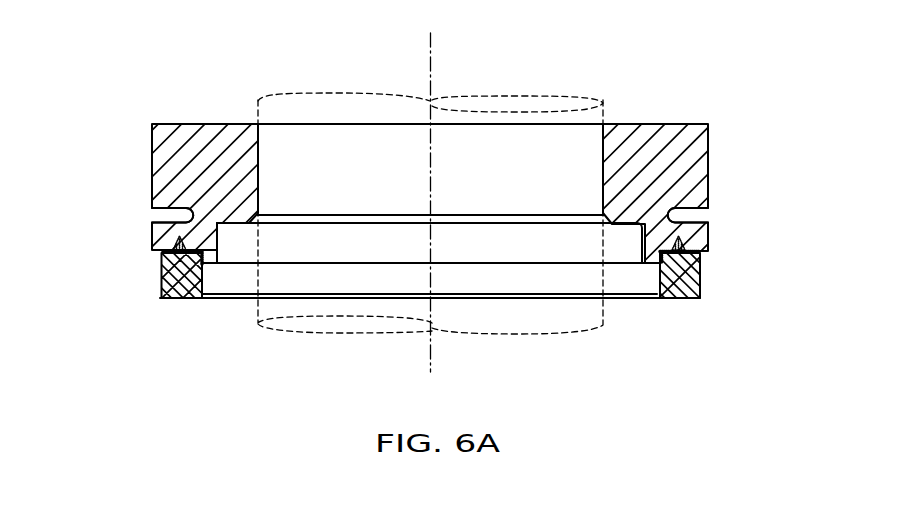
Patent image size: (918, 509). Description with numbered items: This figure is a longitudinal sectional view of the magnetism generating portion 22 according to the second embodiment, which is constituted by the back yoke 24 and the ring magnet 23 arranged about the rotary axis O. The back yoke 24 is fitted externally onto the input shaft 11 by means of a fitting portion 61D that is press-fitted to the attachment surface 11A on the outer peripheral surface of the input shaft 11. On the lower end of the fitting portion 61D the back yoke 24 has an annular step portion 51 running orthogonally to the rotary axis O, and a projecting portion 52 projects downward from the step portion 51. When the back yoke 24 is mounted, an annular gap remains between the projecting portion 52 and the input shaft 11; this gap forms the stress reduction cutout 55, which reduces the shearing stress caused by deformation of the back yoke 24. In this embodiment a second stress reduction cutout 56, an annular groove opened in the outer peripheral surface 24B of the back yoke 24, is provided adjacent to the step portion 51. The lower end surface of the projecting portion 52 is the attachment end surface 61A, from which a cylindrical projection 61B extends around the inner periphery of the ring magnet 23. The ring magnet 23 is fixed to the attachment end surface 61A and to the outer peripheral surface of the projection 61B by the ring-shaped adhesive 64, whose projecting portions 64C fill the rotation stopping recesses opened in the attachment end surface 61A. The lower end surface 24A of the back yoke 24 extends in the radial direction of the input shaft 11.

The input shaft 11 is at (605, 310).
The attachment surface 11A is at (612, 125).
The magnetism generating portion 22 is at (722, 125).
The ring magnet 23 is at (160, 283).
The back yoke 24 is at (163, 135).
The lower end surface 24A is at (202, 266).
The outer peripheral surface 24B is at (163, 170).
The step portion 51 is at (245, 223).
The projecting portion 52 is at (218, 242).
The stress reduction cutout 55 is at (238, 242).
The stress reduction cutout 56 is at (176, 211).
The attachment end surface 61A is at (160, 252).
The projection 61B is at (203, 254).
The fitting portion 61D is at (259, 168).
The adhesive 64 is at (698, 248).
The projecting portion 64C is at (708, 223).
The rotary axis O is at (432, 72).